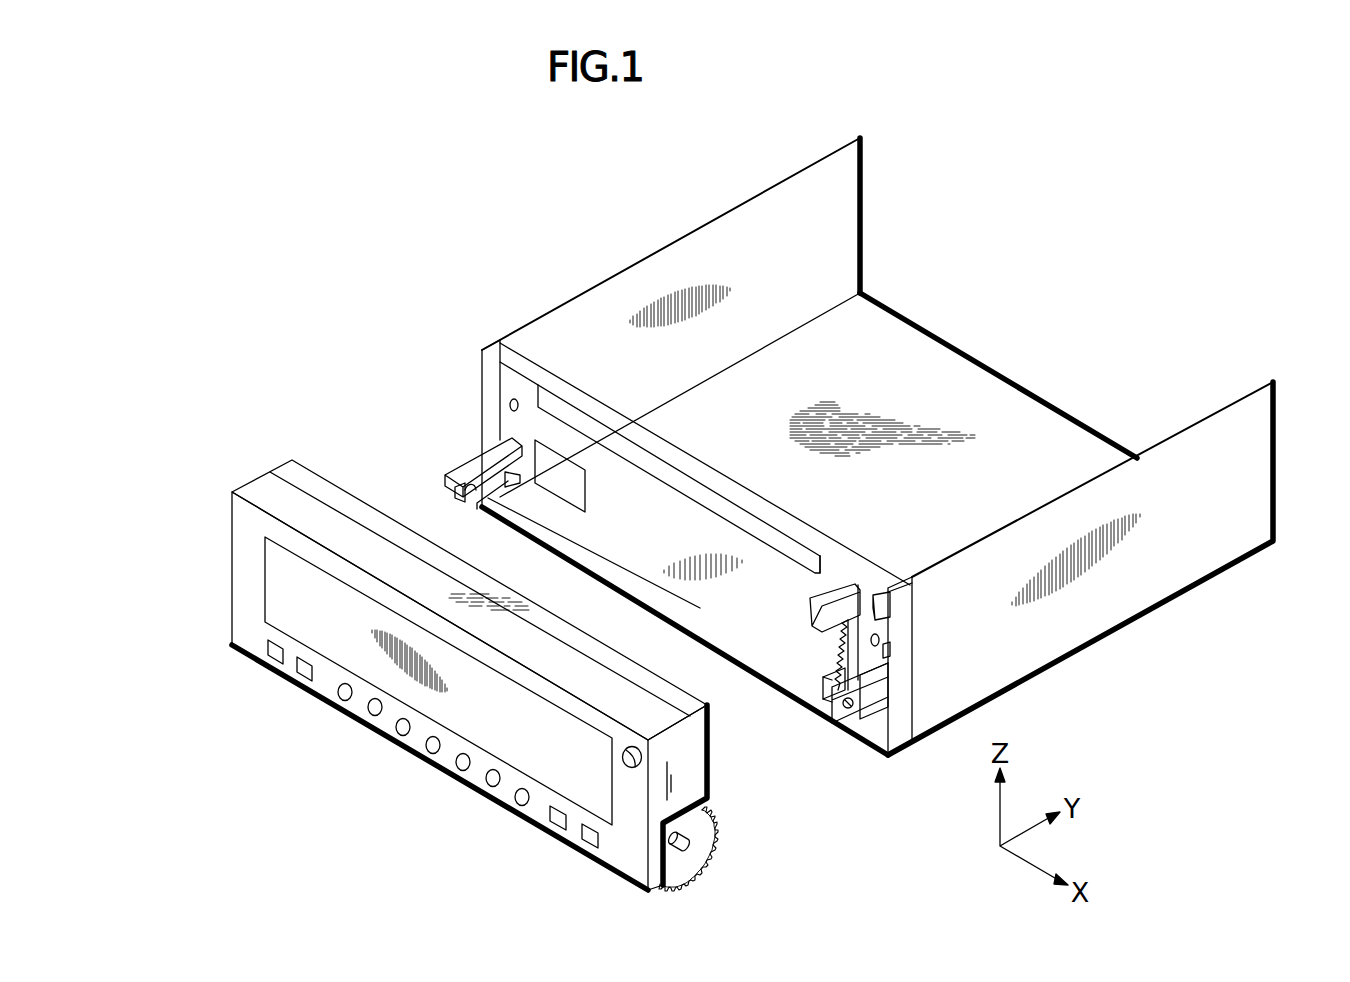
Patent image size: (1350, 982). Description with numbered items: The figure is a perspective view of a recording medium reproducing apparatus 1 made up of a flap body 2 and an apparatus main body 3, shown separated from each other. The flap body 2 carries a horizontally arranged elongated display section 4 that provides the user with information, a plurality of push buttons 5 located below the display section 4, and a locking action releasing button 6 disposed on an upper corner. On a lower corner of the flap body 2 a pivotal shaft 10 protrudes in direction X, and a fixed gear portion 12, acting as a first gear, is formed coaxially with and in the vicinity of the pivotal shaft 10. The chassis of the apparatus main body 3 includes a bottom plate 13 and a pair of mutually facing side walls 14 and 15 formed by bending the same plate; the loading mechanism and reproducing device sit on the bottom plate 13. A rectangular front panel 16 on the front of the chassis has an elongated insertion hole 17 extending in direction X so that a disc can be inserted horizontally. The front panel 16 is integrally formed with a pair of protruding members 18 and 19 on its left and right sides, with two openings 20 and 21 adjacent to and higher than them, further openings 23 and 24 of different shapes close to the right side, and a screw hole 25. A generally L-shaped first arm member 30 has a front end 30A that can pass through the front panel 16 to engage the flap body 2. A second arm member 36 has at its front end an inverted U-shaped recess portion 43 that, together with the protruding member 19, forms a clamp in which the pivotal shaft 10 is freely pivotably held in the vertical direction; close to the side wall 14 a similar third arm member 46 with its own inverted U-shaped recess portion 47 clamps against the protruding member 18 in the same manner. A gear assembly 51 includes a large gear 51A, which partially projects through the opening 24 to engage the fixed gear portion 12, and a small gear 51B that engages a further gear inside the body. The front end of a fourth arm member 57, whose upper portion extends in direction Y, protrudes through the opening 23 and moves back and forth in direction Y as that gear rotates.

The recording medium reproducing apparatus 1 is at (384, 254).
The flap body 2 is at (260, 465).
The apparatus main body 3 is at (597, 252).
The display section 4 is at (285, 595).
The push buttons 5 is at (437, 750).
The locking action releasing button 6 is at (635, 748).
The pivotal shaft 10 is at (690, 845).
The fixed gear portion 12 is at (712, 834).
The bottom plate 13 is at (955, 390).
The side wall 14 is at (837, 223).
The side wall 15 is at (1270, 452).
The front panel 16 is at (630, 548).
The insertion hole 17 is at (673, 478).
The protruding member 18 is at (453, 491).
The protruding member 19 is at (832, 728).
The opening 20 is at (505, 445).
The opening 21 is at (888, 648).
The opening 23 is at (843, 587).
The opening 24 is at (838, 630).
The screw hole 25 is at (513, 398).
The first arm member 30 is at (890, 600).
The front end 30A is at (880, 592).
The second arm member 36 is at (870, 688).
The inverted U-shaped recess portion 43 is at (848, 710).
The third arm member 46 is at (470, 475).
The inverted U-shaped recess portion 47 is at (470, 501).
The gear assembly 51 is at (843, 684).
The large gear 51A is at (842, 689).
The small gear 51B is at (830, 672).
The fourth arm member 57 is at (812, 612).